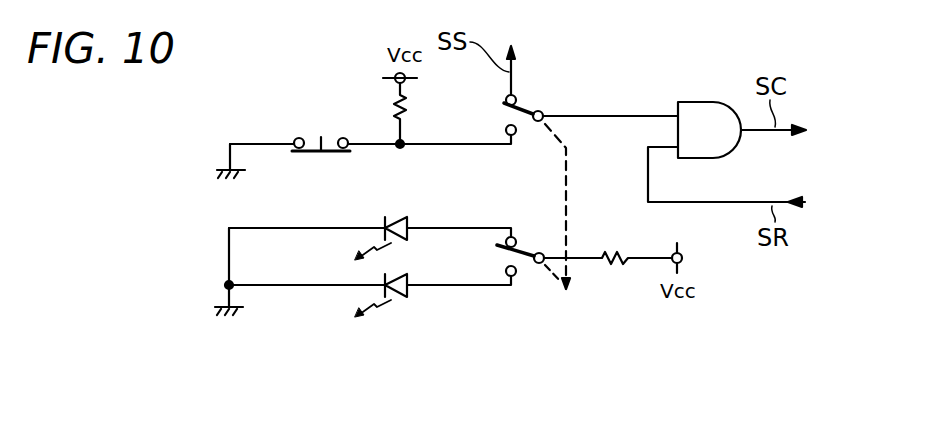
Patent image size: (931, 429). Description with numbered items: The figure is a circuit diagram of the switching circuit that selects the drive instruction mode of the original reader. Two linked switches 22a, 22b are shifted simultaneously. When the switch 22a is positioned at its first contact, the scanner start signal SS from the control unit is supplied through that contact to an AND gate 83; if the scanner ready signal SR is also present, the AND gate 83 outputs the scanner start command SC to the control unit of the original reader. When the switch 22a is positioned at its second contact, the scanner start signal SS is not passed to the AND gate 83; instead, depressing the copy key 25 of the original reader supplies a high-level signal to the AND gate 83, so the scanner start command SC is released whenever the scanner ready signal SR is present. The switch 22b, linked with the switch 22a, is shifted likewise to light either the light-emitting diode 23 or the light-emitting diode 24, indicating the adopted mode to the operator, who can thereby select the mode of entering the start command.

The copy key 25 is at (314, 134).
The switch 22a is at (531, 106).
The switch 22b is at (525, 262).
The light-emitting diode 23 is at (405, 222).
The light-emitting diode 24 is at (407, 291).
The AND gate 83 is at (711, 101).